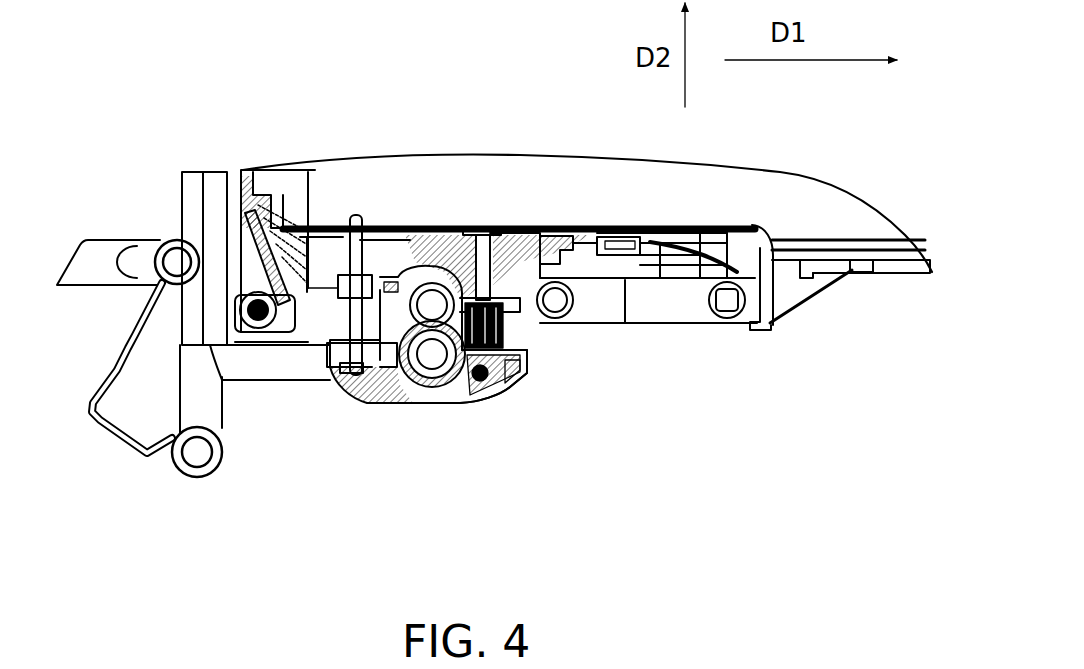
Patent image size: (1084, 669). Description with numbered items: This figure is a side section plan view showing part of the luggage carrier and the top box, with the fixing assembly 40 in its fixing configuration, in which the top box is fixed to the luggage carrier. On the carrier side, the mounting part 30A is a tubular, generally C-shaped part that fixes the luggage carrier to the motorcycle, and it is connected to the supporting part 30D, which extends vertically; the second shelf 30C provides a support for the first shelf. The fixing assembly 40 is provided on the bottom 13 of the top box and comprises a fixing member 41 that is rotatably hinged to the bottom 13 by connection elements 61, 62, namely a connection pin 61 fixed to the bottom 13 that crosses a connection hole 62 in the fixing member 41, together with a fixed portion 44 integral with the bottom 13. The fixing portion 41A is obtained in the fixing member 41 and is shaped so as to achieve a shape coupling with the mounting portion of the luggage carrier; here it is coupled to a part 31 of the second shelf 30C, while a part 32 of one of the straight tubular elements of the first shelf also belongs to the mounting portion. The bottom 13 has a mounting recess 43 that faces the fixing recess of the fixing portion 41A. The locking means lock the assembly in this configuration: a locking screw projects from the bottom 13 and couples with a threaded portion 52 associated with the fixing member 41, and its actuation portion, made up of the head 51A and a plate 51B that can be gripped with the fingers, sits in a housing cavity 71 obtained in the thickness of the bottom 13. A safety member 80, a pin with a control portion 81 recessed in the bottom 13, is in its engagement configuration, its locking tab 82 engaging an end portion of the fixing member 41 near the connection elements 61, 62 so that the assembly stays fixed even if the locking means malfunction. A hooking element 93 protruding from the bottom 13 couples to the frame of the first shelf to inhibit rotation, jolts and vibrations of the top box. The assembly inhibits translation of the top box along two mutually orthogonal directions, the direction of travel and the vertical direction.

The bottom 13 is at (667, 208).
The safety member 80 is at (478, 200).
The control portion 81 is at (490, 225).
The locking tab 82 is at (510, 327).
The part of the first shelf 32 is at (507, 307).
The part of the second shelf 31 is at (487, 380).
The fixing assembly 40 is at (757, 440).
The fixing member 41 is at (410, 400).
The fixing portion 41A is at (425, 403).
The mounting recess 43 is at (357, 228).
The fixed portion 44 is at (403, 300).
The threaded portion 52 is at (365, 403).
The connection pin 61 is at (482, 397).
The connection hole 62 is at (505, 393).
The housing cavity 71 is at (318, 262).
The head 51A is at (345, 286).
The plate 51B is at (348, 213).
The mounting part 30A is at (100, 237).
The second shelf 30C is at (235, 390).
The supporting part 30D is at (197, 186).
The hooking element 93 is at (775, 324).